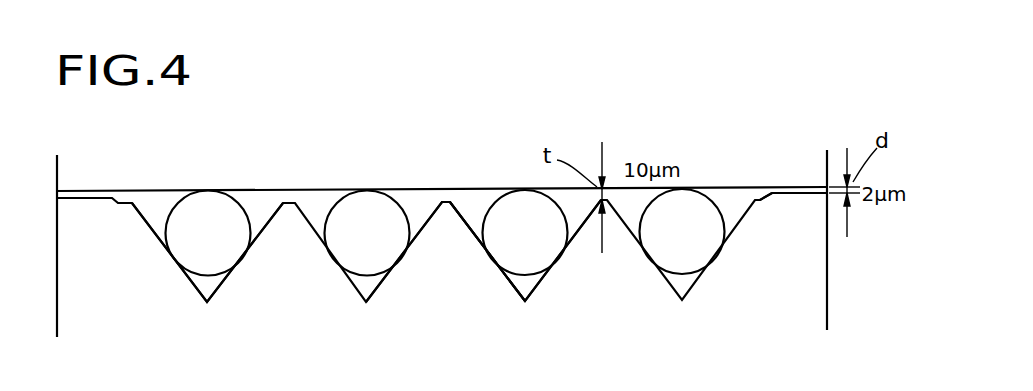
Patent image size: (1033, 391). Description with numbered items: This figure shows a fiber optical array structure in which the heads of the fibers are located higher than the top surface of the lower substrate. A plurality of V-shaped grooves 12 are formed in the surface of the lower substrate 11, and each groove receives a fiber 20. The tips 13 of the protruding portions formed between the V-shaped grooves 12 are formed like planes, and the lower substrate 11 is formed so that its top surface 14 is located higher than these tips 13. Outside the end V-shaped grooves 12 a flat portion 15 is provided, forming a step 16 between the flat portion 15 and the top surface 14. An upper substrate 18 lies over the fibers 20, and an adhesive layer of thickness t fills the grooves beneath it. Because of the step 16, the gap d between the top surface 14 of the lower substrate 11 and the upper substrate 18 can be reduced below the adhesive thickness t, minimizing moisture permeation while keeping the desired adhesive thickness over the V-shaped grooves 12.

The lower substrate 11 is at (102, 300).
The V-shaped groove 12 is at (363, 283).
The tip of protruding portion 13 is at (443, 205).
The top surface of the lower substrate 14 is at (808, 193).
The flat portion 15 is at (757, 197).
The step 16 is at (761, 190).
The upper substrate 18 is at (792, 168).
The fiber 20 is at (220, 213).